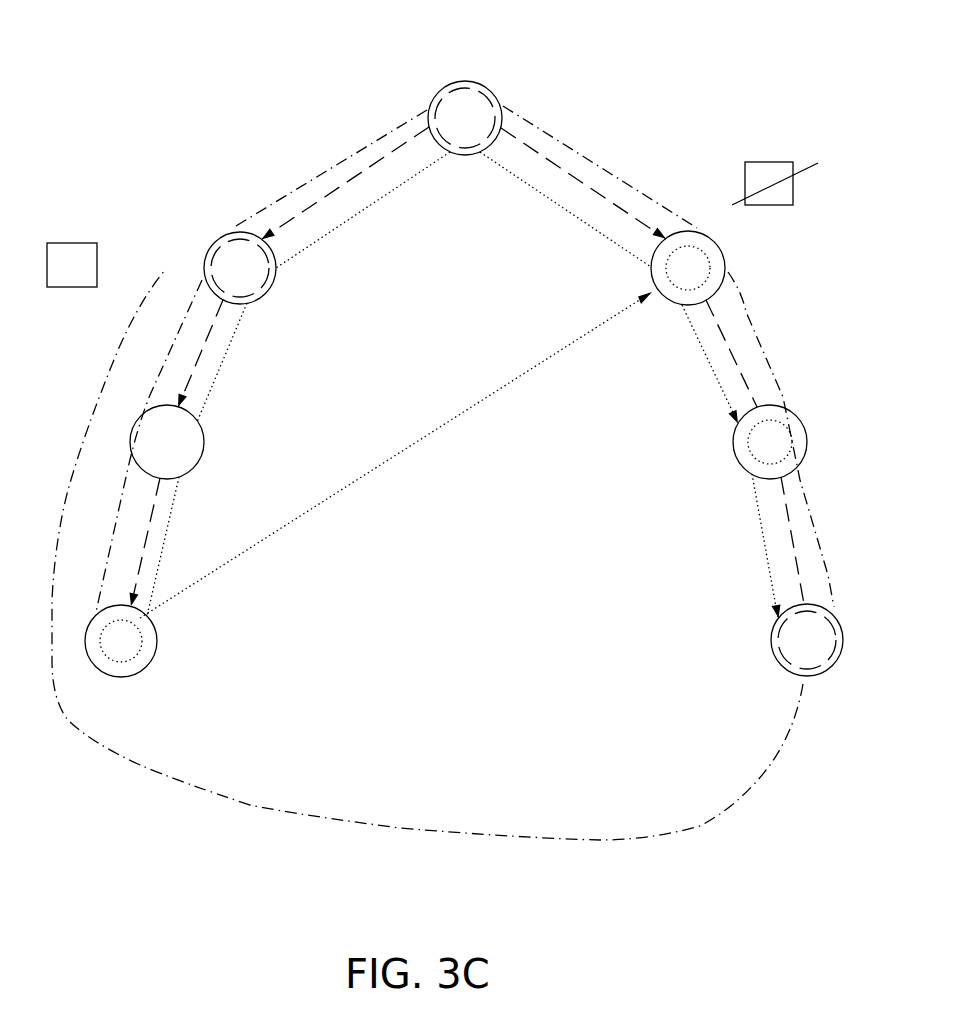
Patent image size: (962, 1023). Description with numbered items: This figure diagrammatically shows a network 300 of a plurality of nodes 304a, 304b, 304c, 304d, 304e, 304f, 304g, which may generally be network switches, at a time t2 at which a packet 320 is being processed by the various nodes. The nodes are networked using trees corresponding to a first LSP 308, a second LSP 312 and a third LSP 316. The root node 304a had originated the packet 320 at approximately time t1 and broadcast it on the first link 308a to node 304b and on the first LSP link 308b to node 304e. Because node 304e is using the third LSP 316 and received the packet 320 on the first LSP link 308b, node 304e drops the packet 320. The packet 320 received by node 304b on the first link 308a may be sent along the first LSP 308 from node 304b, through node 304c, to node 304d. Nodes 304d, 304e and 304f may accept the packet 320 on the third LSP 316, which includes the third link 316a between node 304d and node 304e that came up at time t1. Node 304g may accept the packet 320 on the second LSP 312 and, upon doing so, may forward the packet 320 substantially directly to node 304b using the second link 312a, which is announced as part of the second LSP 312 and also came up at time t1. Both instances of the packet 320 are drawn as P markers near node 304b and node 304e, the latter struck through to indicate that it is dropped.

The network 300 is at (100, 60).
The root node 304a is at (478, 84).
The node 304b is at (224, 233).
The node 304c is at (203, 442).
The node 304d is at (157, 637).
The node 304e is at (707, 234).
The node 304f is at (734, 438).
The node 304g is at (772, 626).
The first LSP 308 is at (323, 197).
The first link 308a is at (373, 168).
The first LSP link 308b is at (606, 190).
The second LSP 312 is at (375, 133).
The second link 312a is at (167, 776).
The third LSP 316 is at (353, 222).
The third link 316a is at (437, 436).
The packet 320 is at (200, 258).